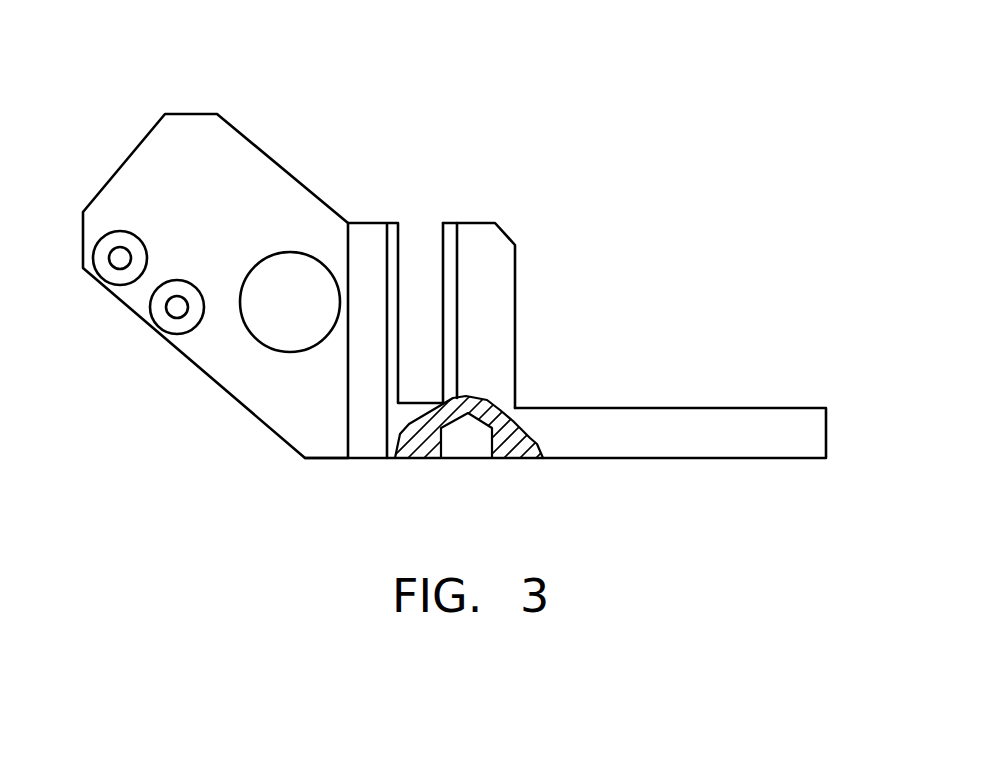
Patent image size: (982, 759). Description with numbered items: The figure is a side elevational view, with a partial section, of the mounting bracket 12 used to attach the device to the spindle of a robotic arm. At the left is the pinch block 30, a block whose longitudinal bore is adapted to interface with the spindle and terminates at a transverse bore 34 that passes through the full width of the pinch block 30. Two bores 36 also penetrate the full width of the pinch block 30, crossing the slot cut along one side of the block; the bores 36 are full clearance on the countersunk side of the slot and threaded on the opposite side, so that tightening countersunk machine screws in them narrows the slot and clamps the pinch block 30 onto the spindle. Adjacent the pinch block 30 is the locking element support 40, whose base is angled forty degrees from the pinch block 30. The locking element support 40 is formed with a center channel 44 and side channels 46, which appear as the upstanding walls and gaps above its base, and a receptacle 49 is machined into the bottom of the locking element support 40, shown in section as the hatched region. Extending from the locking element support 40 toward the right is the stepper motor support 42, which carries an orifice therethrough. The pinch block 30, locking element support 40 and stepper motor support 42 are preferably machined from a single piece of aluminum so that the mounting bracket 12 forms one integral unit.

The mounting bracket 12 is at (211, 80).
The pinch block 30 is at (135, 150).
The transverse bore 34 is at (268, 272).
The bores 36 is at (112, 280).
The locking element support 40 is at (513, 305).
The stepper motor support 42 is at (825, 440).
The center channel 44 is at (427, 232).
The side channels 46 is at (388, 248).
The receptacle 49 is at (463, 453).